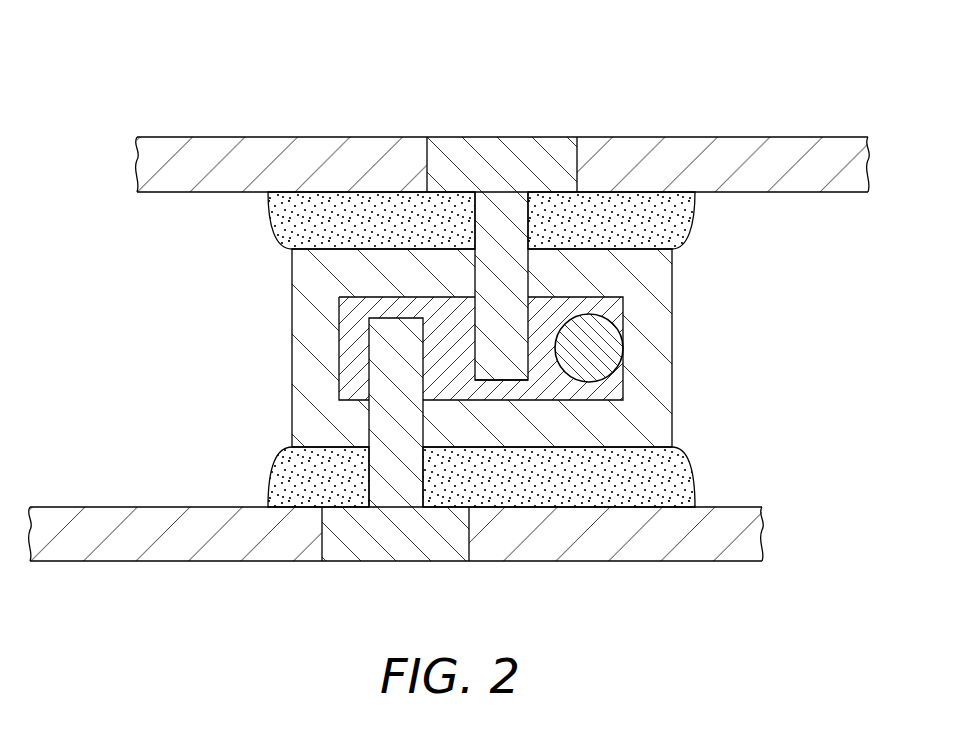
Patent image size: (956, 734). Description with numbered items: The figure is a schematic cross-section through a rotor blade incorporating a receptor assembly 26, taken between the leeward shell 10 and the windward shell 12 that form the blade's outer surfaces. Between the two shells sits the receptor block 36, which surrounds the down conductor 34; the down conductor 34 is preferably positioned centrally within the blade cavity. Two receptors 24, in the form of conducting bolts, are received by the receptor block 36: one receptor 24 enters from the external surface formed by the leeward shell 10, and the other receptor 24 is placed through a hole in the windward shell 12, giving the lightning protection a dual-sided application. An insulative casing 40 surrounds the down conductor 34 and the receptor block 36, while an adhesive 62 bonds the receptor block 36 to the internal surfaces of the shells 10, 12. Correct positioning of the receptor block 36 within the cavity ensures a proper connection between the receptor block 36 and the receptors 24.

The leeward shell 10 is at (695, 137).
The windward shell 12 is at (700, 561).
The receptor 24 is at (551, 137).
The receptor assembly 26 is at (537, 348).
The down conductor 34 is at (612, 350).
The receptor block 36 is at (623, 388).
The insulative casing 40 is at (672, 432).
The adhesive 62 is at (695, 220).